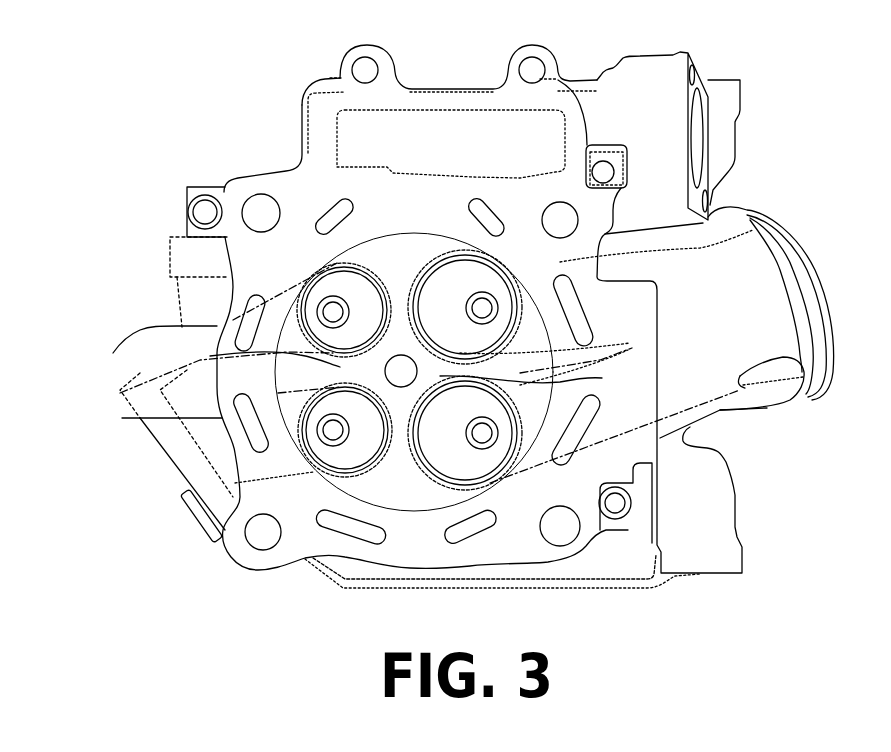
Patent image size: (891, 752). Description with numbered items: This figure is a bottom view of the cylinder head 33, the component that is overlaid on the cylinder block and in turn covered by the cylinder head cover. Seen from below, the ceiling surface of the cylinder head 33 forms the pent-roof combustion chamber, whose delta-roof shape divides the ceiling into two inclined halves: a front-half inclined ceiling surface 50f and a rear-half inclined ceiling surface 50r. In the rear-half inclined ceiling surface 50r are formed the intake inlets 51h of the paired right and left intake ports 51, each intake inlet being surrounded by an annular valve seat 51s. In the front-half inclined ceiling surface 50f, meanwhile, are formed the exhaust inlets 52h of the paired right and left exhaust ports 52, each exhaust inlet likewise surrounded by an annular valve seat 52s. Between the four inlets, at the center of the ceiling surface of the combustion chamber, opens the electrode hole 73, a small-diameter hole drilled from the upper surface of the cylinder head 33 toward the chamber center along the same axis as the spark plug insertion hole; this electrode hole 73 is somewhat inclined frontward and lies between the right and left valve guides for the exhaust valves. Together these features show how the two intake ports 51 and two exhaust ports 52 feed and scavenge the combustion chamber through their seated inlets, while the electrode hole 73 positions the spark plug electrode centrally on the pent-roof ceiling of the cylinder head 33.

The cylinder head 33 is at (267, 113).
The intake port 51 is at (620, 307).
The intake inlet 51h is at (451, 300).
The annular valve seat 51s is at (441, 260).
The exhaust port 52 is at (291, 336).
The exhaust inlet 52h is at (362, 306).
The annular valve seat 52s is at (364, 268).
The electrode hole 73 is at (401, 353).
The front-half inclined ceiling surface 50f is at (210, 356).
The rear-half inclined ceiling surface 50r is at (590, 380).